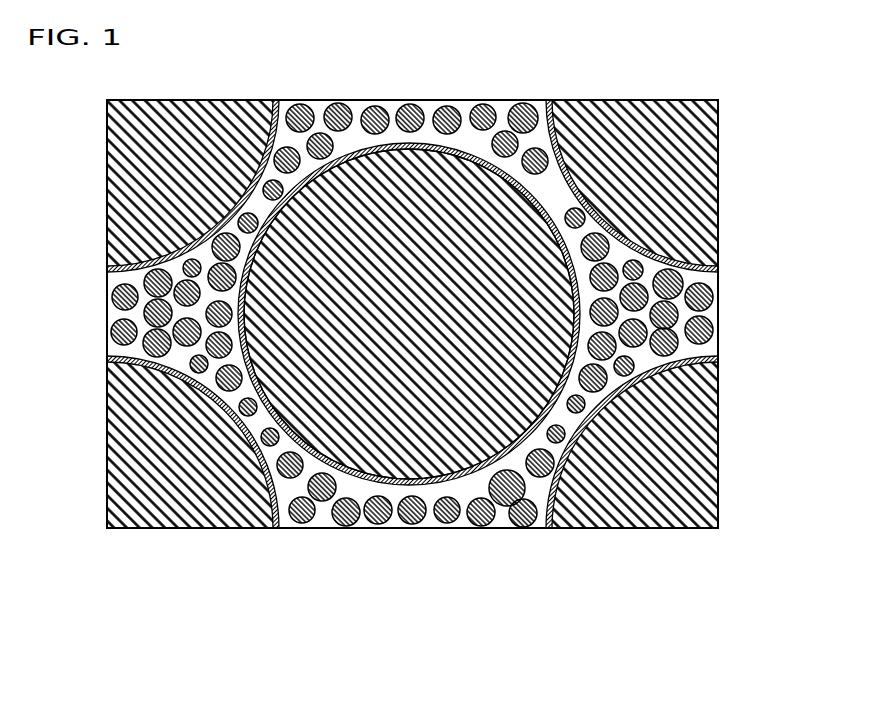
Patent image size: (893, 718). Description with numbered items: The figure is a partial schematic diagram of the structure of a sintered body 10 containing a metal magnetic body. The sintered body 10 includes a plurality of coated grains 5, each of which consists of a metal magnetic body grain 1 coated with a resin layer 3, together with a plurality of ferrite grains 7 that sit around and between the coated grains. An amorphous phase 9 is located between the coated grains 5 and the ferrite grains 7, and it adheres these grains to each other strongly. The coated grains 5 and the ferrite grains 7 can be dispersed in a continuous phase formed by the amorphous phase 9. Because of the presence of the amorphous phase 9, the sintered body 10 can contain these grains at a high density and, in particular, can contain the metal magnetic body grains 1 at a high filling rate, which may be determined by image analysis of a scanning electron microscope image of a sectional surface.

The metal magnetic body grain 1 is at (368, 447).
The resin layer 3 is at (396, 487).
The coated grain 5 is at (409, 409).
The ferrite grain 7 is at (447, 512).
The amorphous phase 9 is at (502, 514).
The sintered body 10 is at (445, 350).